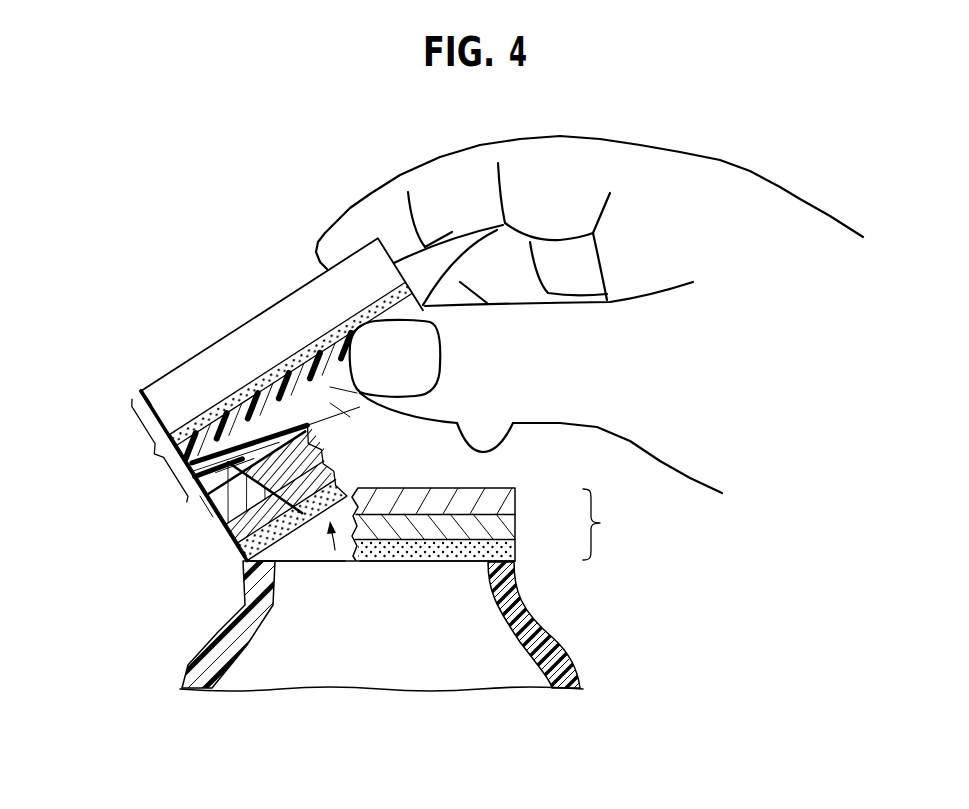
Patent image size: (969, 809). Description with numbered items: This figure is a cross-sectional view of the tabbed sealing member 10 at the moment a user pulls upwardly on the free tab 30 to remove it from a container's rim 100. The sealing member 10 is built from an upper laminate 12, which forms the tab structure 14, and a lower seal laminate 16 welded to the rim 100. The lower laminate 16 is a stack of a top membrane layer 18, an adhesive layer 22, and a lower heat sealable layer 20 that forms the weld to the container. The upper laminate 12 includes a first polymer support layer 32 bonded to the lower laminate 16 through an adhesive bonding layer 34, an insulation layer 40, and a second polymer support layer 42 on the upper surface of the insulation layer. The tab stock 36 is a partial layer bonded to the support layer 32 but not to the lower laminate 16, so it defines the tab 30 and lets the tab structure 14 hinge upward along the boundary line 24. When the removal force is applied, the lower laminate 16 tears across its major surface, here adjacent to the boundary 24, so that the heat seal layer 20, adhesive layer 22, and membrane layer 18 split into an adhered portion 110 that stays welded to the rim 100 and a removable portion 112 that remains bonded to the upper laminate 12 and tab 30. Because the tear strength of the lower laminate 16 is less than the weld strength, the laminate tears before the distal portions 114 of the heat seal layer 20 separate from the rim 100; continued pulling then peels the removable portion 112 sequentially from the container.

The tabbed sealing member 10 is at (90, 328).
The upper laminate 12 is at (271, 421).
The tab structure 14 is at (288, 272).
The lower seal laminate 16 is at (240, 563).
The top layer 18 is at (318, 456).
The lower heat sealable layer 20 is at (334, 495).
The adhesive layer 22 is at (331, 470).
The boundary line 24 is at (307, 427).
The free tab 30 is at (420, 276).
The first polymer support layer 32 is at (141, 390).
The adhesive bonding layer 34 is at (203, 503).
The tab stock 36 is at (358, 402).
The insulation layer 40 is at (214, 408).
The second polymer support layer 42 is at (233, 345).
The container rim 100 is at (258, 586).
The adhered portion 110 is at (418, 670).
The removable portion 112 is at (285, 565).
The distal portions 114 is at (474, 575).